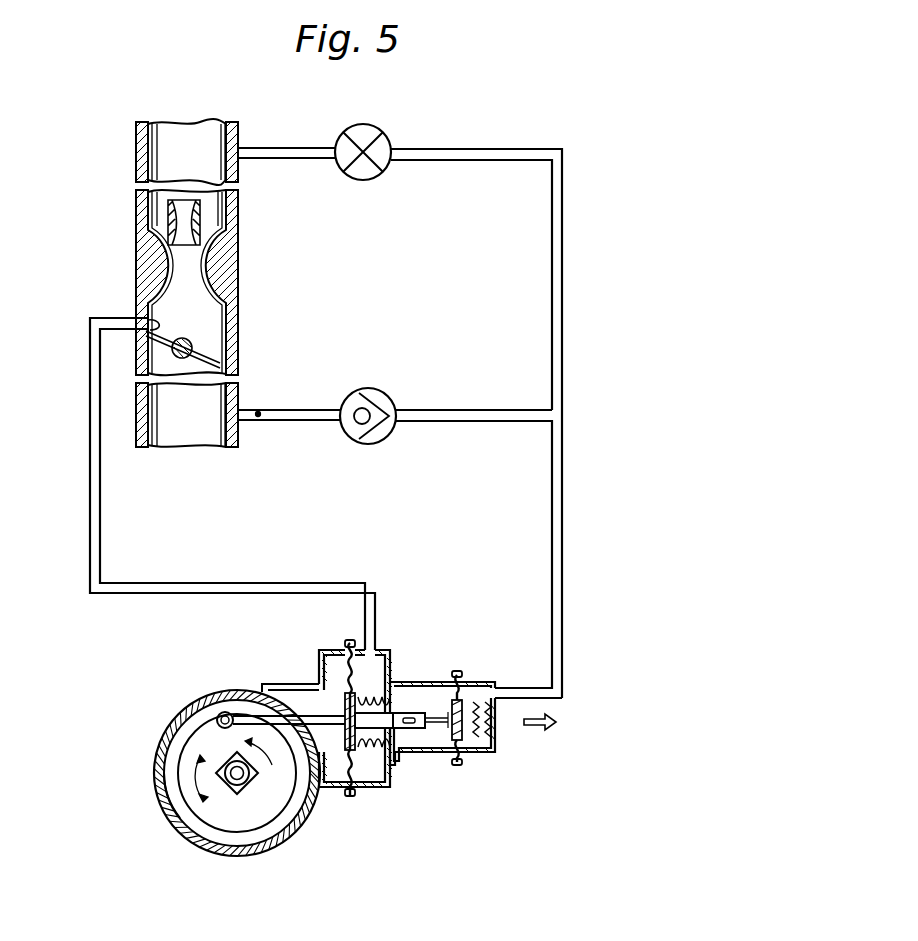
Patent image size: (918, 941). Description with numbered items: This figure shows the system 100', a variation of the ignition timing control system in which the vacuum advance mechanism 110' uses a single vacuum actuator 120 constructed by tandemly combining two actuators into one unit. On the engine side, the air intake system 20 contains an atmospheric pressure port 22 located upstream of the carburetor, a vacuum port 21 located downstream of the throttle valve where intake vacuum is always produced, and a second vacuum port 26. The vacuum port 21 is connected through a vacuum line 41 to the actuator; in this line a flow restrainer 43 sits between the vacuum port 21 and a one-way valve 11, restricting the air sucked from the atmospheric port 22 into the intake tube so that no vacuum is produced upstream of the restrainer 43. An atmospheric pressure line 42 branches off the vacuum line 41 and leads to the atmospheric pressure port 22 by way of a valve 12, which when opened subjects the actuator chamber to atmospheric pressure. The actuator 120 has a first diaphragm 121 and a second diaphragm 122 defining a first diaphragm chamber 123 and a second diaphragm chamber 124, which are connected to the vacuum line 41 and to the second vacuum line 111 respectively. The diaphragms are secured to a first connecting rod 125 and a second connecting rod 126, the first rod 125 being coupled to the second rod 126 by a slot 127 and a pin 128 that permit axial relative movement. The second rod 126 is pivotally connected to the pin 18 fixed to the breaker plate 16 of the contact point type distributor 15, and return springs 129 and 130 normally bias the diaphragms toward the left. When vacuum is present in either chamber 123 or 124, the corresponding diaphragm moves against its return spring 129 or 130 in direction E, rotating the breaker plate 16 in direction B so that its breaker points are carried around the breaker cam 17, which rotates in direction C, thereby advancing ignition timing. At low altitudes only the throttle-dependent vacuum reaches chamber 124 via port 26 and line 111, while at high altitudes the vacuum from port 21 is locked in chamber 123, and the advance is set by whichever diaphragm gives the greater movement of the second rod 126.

The system 100' is at (310, 462).
The air intake system 20 is at (104, 199).
The atmospheric pressure port 22 is at (232, 150).
The valve 12 is at (364, 125).
The atmospheric pressure line 42 is at (552, 228).
The second vacuum port 26 is at (150, 322).
The one-way valve 11 is at (377, 391).
The vacuum port 21 is at (226, 413).
The flow restrainer 43 is at (258, 417).
The vacuum line 41 is at (518, 453).
The second vacuum line 111 is at (112, 594).
The advance mechanism 110' is at (328, 740).
The distributor 15 is at (156, 773).
The breaker plate 16 is at (208, 834).
The breaker cam 17 is at (252, 790).
The pin 18 is at (220, 712).
The vacuum actuator 120 is at (397, 757).
The return spring 130 is at (355, 690).
The second connecting rod 126 is at (406, 703).
The second diaphragm chamber 124 is at (368, 774).
The second diaphragm 122 is at (345, 767).
The first diaphragm 121 is at (425, 752).
The pin 128 is at (435, 712).
The slot 127 is at (416, 716).
The first connecting rod 125 is at (458, 678).
The return spring 129 is at (488, 706).
The first diaphragm chamber 123 is at (478, 750).